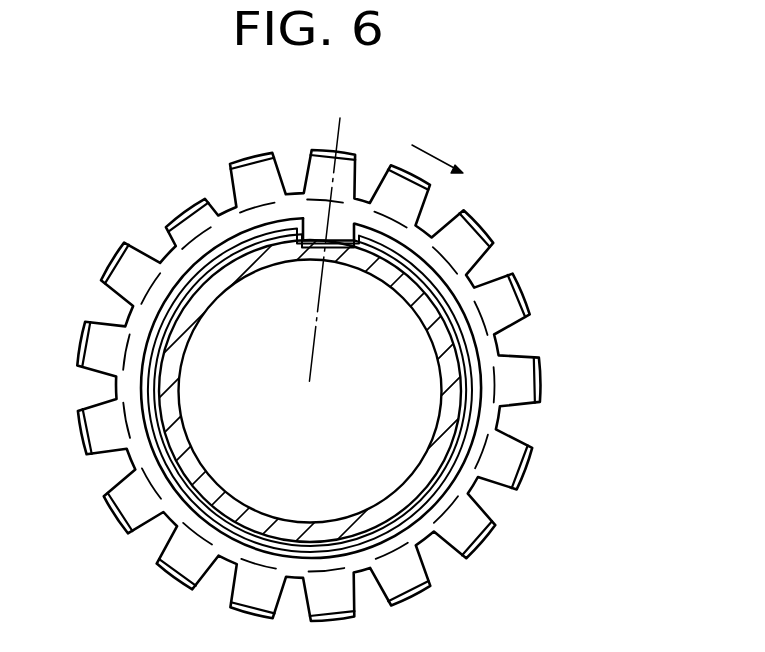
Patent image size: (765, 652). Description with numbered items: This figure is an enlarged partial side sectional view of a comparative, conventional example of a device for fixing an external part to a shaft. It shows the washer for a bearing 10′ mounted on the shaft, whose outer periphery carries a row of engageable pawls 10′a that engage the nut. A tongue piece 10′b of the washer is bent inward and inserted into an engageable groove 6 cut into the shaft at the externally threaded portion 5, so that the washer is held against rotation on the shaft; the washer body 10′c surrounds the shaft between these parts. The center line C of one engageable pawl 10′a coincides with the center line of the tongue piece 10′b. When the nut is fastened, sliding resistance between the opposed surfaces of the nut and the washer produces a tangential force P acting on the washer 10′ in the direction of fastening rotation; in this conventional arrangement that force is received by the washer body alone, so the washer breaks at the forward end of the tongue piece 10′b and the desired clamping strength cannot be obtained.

The washer for a bearing 10′ is at (478, 221).
The engageable pawl 10′a is at (348, 152).
The tongue piece 10′b is at (318, 229).
The gear bore 10′c is at (490, 351).
The engageable groove 6 is at (345, 230).
The externally threaded portion 5 is at (226, 487).
The center line C is at (338, 132).
The tangential force P is at (447, 168).